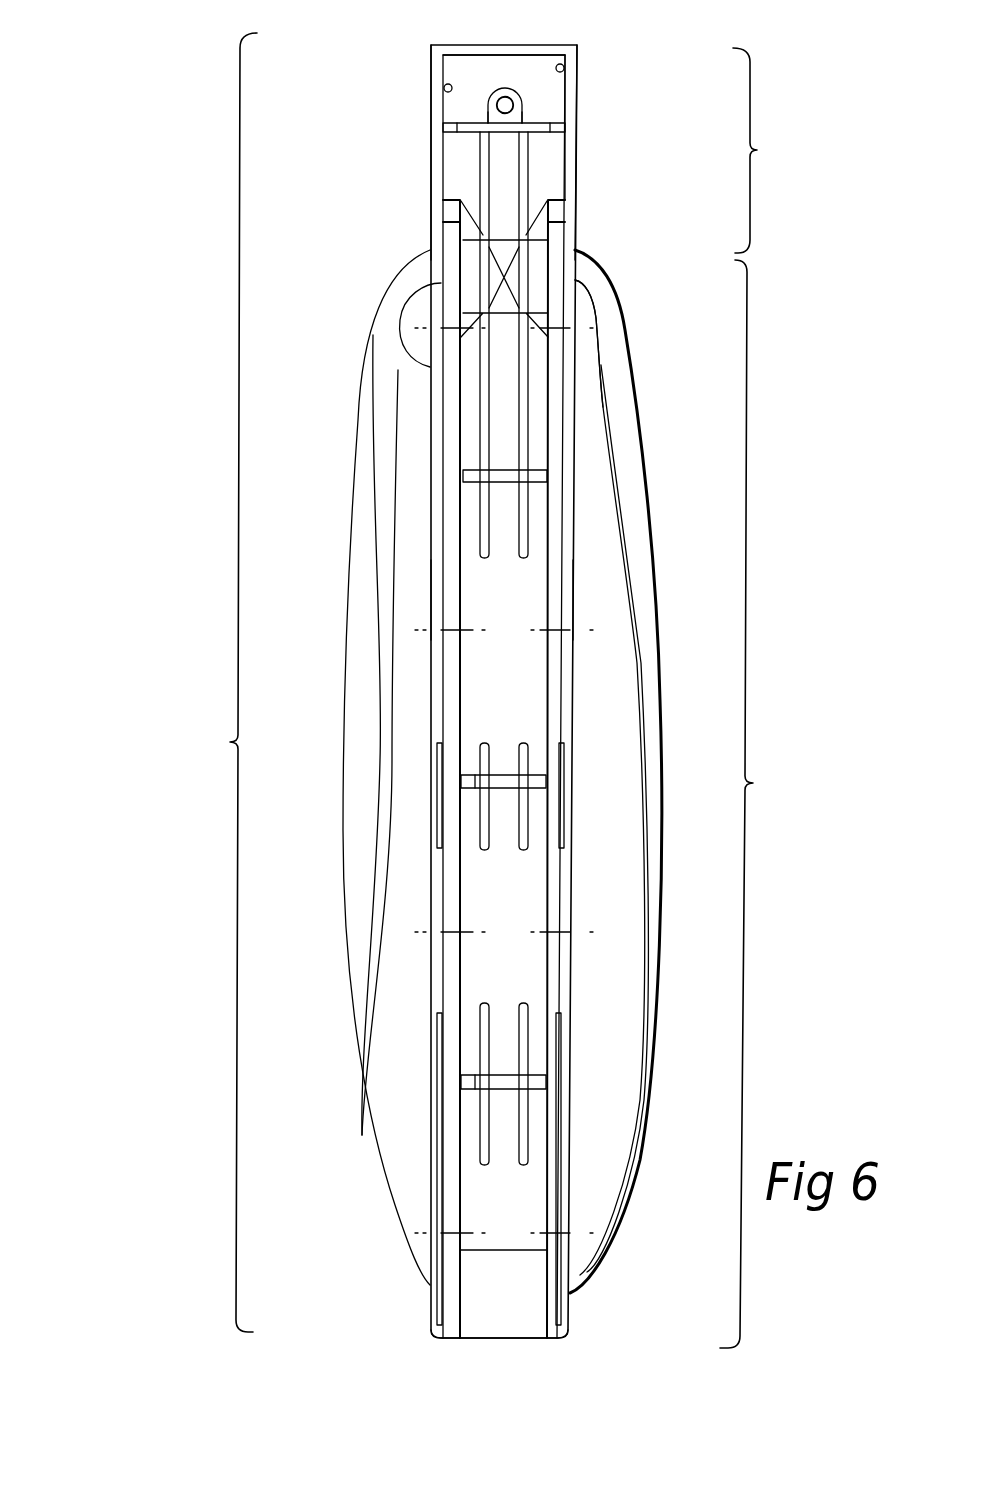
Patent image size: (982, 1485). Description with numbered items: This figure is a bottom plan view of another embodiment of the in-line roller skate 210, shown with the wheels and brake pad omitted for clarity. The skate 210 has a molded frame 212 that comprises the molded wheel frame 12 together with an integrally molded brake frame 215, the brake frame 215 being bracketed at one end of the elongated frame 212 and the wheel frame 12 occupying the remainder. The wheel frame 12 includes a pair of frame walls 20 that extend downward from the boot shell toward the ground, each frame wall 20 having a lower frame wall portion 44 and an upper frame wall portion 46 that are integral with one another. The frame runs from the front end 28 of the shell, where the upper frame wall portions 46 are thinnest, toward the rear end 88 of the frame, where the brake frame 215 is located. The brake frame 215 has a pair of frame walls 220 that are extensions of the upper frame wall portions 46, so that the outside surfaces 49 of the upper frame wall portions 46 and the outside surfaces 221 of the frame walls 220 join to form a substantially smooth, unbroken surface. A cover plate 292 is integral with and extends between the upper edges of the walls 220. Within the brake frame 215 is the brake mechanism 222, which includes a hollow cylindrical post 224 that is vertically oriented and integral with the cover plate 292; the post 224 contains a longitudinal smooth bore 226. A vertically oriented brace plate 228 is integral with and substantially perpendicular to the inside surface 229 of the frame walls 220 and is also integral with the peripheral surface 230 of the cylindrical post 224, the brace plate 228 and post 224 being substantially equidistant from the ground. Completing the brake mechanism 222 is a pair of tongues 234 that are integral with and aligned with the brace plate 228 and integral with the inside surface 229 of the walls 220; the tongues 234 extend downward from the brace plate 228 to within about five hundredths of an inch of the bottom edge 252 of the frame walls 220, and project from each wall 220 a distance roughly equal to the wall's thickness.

The in-line roller skate 210 is at (140, 595).
The molded frame 212 is at (217, 682).
The molded brake frame 215 is at (770, 150).
The molded wheel frame 12 is at (751, 804).
The frame walls 20 is at (422, 365).
The front end 28 is at (422, 1288).
The lower frame wall portion 44 is at (432, 628).
The upper frame wall portion 46 is at (422, 580).
The outside surfaces 49 is at (392, 320).
The rear end 88 is at (428, 202).
The frame walls 220 is at (423, 62).
The outside surfaces 221 is at (408, 50).
The brake mechanism 222 is at (590, 152).
The hollow cylindrical post 224 is at (509, 84).
The longitudinal smooth bore 226 is at (533, 113).
The brace plate 228 is at (512, 106).
The inside surface 229 is at (444, 89).
The peripheral surface 230 is at (487, 100).
The tongues 234 is at (457, 133).
The bottom edge 252 is at (437, 116).
The cover plate 292 is at (504, 71).